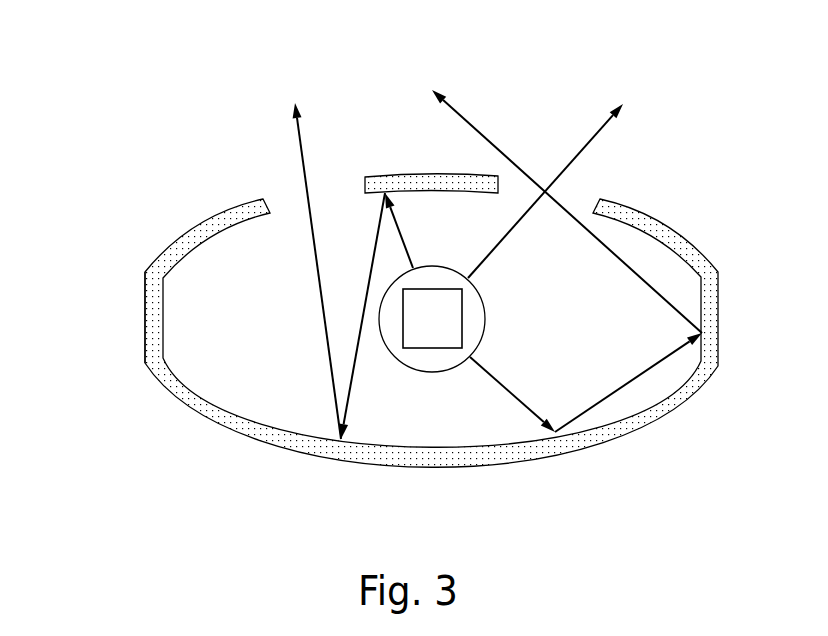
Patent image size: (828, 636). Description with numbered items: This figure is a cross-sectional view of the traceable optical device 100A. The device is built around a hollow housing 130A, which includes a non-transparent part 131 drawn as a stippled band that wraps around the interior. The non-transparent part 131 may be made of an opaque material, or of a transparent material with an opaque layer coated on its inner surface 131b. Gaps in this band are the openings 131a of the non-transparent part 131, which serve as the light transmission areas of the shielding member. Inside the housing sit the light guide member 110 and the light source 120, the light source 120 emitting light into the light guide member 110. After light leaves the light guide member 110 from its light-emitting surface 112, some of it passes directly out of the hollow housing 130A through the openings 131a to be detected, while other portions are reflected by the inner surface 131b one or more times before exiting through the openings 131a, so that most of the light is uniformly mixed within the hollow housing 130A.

The traceable optical device 100A is at (94, 30).
The hollow housing 130A is at (382, 263).
The non-transparent part 131 is at (200, 235).
The openings 131a is at (359, 159).
The inner surface 131b is at (150, 294).
The light guide member 110 is at (392, 335).
The light-emitting surface 112 is at (407, 365).
The light source 120 is at (430, 335).